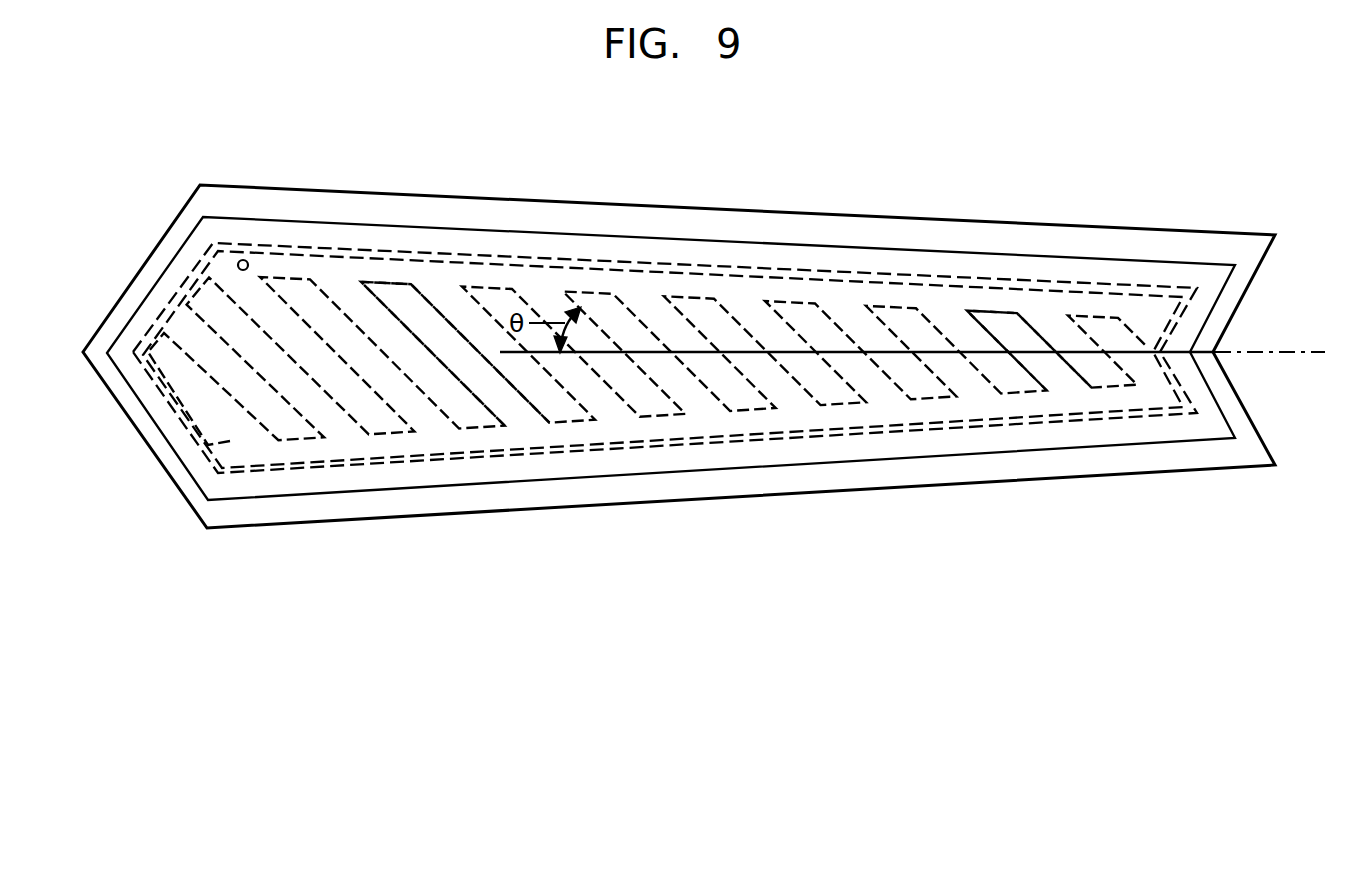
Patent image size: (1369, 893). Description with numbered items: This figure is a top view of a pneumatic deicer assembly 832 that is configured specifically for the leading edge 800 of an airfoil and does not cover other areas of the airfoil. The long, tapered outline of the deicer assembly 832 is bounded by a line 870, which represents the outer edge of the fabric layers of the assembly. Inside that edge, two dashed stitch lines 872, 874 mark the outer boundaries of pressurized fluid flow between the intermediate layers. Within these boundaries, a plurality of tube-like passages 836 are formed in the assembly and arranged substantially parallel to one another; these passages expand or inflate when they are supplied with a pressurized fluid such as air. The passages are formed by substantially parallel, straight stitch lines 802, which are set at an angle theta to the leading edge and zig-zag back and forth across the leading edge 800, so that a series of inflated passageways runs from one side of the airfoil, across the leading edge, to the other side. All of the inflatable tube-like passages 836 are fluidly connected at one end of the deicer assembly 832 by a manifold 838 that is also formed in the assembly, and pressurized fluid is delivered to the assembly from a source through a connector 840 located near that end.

The leading edge 800 is at (1266, 352).
The stitch lines 802 is at (348, 418).
The deicer assembly 832 is at (556, 204).
The tube-like passages 836 is at (1008, 352).
The manifold 838 is at (374, 268).
The connector 840 is at (246, 260).
The line 870 is at (910, 460).
The stitch line 872 is at (562, 452).
The stitch line 874 is at (621, 446).